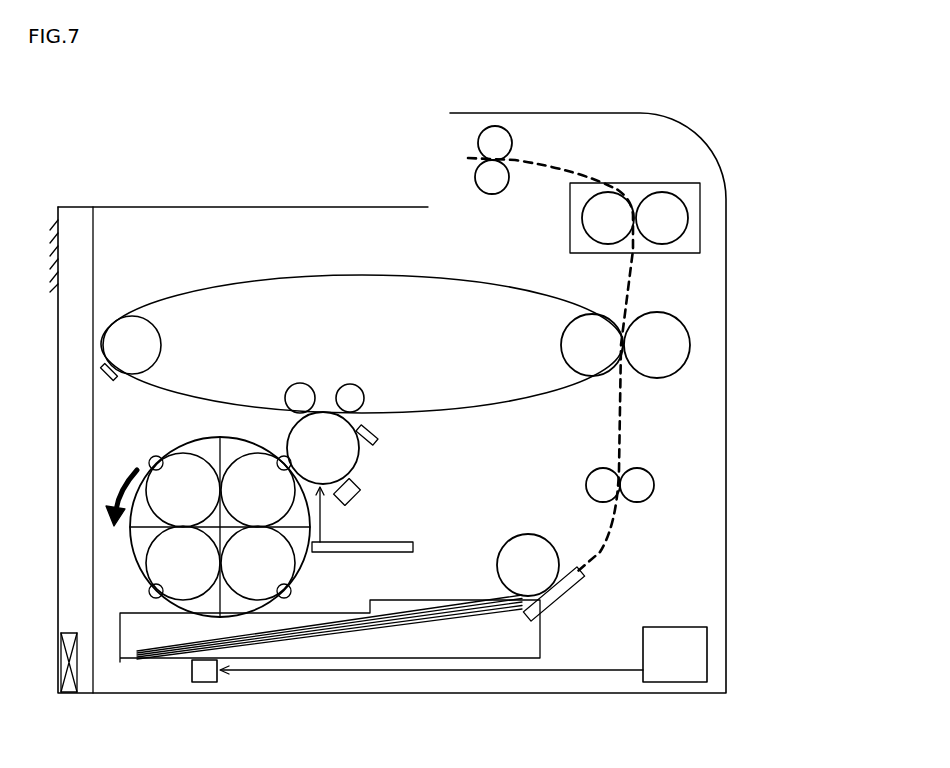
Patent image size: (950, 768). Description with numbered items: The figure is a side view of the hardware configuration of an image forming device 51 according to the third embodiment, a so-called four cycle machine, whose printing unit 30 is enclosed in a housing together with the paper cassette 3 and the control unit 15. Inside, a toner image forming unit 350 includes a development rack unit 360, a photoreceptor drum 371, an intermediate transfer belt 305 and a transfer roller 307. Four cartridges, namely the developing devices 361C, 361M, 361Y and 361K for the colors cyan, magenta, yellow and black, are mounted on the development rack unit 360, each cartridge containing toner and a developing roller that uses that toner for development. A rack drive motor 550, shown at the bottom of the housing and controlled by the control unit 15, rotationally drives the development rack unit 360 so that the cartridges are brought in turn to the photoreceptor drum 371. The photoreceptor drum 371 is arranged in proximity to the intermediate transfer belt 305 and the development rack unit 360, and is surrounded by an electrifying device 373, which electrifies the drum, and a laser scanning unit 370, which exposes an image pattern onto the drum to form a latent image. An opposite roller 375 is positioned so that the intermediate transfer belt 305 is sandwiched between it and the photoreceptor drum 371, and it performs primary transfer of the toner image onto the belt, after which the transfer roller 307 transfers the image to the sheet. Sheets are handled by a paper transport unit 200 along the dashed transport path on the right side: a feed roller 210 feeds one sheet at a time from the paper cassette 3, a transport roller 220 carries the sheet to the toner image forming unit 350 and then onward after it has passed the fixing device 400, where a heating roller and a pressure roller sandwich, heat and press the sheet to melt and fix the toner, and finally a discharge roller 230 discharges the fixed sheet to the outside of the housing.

The image forming device 51 is at (121, 199).
The printing unit 30 is at (106, 458).
The intermediate transfer belt 305 is at (244, 276).
The opposite roller 375 is at (352, 391).
The development rack unit 360 is at (206, 516).
The yellow cartridge 361Y is at (183, 490).
The magenta cartridge 361M is at (258, 490).
The black cartridge 361K is at (183, 563).
The cyan cartridge 361C is at (258, 563).
The photoreceptor drum 371 is at (332, 448).
The electrifying device 373 is at (355, 500).
The laser scanning unit 370 is at (340, 553).
The toner image forming unit 350 is at (439, 469).
The paper cassette 3 is at (540, 633).
The rack drive motor 550 is at (200, 679).
The control unit 15 is at (697, 657).
The fixing device 400 is at (570, 224).
The transfer roller 307 is at (660, 380).
The discharge roller 230 is at (512, 143).
The transport roller 220 is at (653, 473).
The feed roller 210 is at (585, 563).
The paper transport unit 200 is at (811, 306).